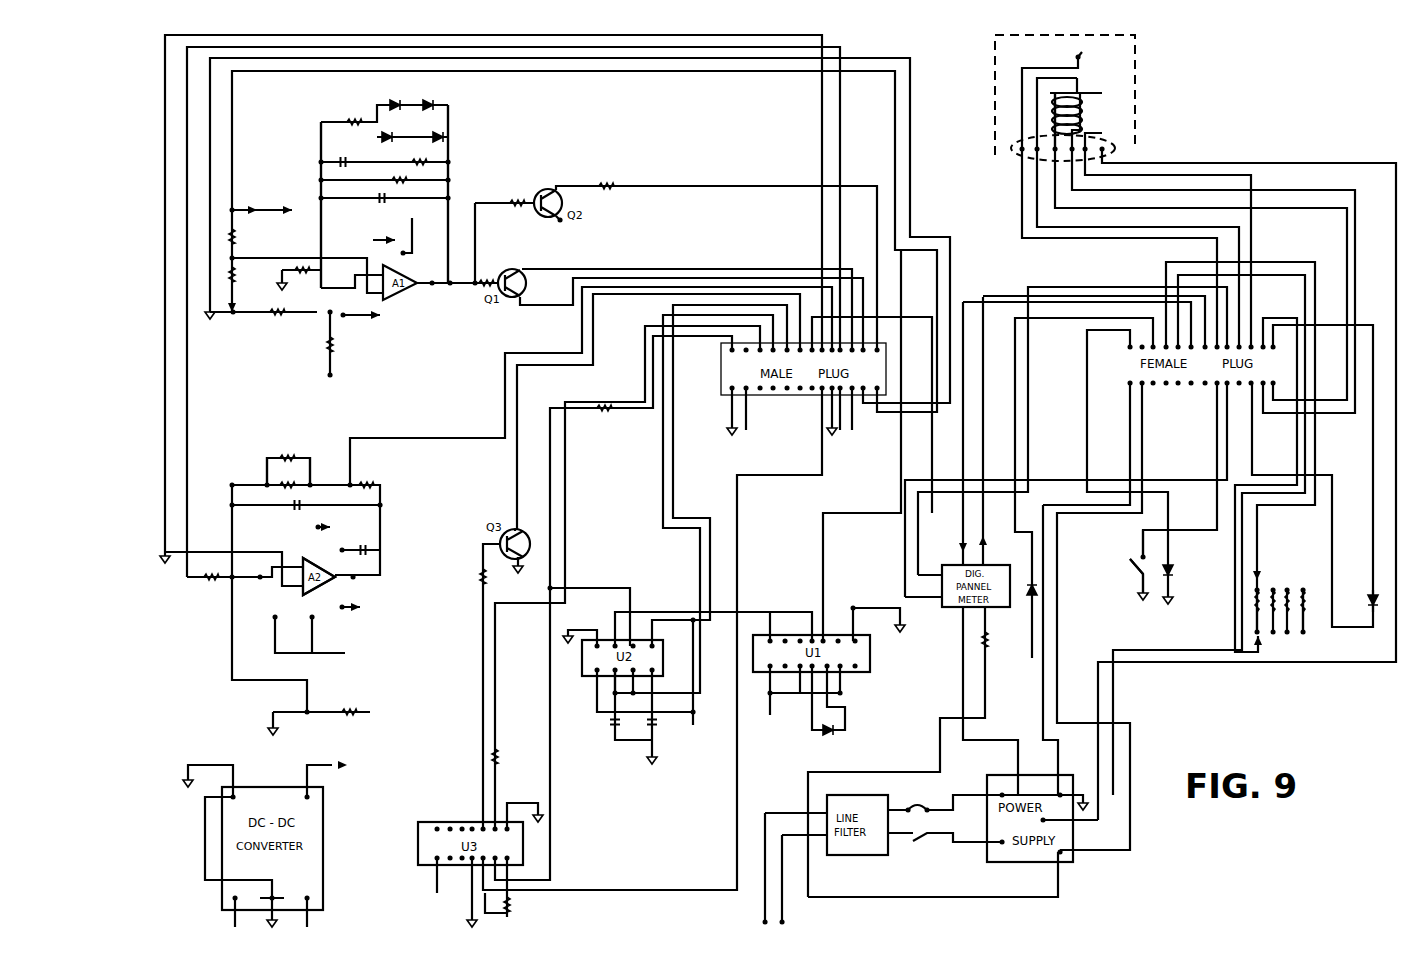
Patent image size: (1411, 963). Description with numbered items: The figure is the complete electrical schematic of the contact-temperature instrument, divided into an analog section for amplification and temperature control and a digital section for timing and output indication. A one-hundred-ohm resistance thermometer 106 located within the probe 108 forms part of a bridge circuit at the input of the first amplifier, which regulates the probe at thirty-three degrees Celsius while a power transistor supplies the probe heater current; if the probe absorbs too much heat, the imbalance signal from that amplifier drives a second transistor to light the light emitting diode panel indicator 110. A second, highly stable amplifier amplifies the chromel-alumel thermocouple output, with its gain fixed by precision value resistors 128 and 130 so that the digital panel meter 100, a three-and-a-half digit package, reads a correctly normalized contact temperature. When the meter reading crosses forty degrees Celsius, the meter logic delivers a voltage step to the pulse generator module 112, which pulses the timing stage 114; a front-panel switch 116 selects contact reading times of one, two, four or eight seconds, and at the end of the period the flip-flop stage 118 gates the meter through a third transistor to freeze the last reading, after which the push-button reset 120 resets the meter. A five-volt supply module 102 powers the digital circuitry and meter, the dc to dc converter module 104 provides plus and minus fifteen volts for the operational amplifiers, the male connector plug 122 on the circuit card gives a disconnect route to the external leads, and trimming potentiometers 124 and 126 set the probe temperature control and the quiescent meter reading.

The digital panel meter 100 is at (943, 607).
The supply module 102 is at (1073, 858).
The converter module 104 is at (325, 868).
The resistance thermometer 106 is at (1085, 92).
The probe 108 is at (1140, 120).
The light emitting diode panel indicator 110 is at (1380, 625).
The pulse generator module 112 is at (870, 672).
The timing stage 114 is at (582, 677).
The front-panel switch 116 is at (1262, 585).
The flip-flop stage 118 is at (452, 822).
The push-button reset 120 is at (1146, 576).
The male connector plug 122 is at (721, 393).
The trimming potentiometer 124 is at (243, 316).
The trimming potentiometer 126 is at (322, 716).
The precision value resistor 128 is at (212, 588).
The precision value resistor 130 is at (278, 488).